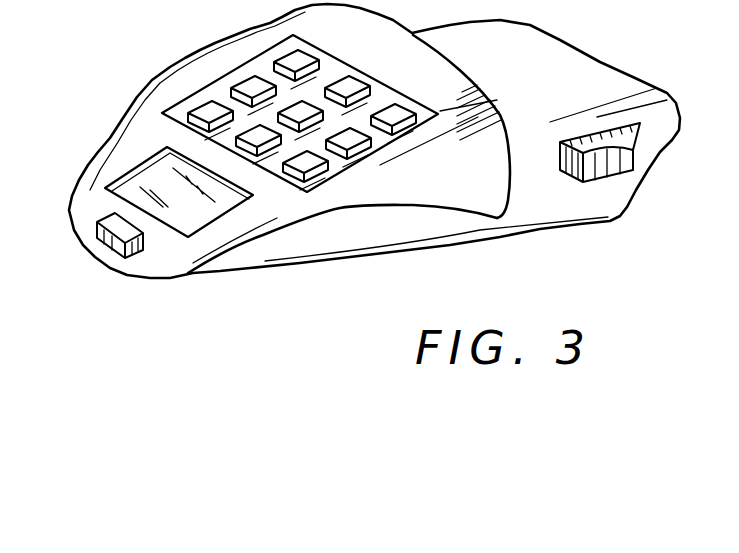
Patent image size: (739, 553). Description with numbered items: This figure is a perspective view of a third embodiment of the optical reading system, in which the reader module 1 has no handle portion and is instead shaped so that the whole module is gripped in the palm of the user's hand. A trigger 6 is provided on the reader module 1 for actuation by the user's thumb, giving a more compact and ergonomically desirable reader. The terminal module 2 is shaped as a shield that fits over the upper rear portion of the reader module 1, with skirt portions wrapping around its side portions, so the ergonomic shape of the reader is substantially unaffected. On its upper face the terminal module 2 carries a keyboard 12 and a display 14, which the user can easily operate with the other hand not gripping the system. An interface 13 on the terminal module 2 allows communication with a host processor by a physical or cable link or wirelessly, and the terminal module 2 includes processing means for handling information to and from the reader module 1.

The reader module 1 is at (587, 72).
The terminal module 2 is at (247, 53).
The trigger 6 is at (603, 165).
The keyboard 12 is at (352, 150).
The interface 13 is at (120, 257).
The display 14 is at (143, 192).